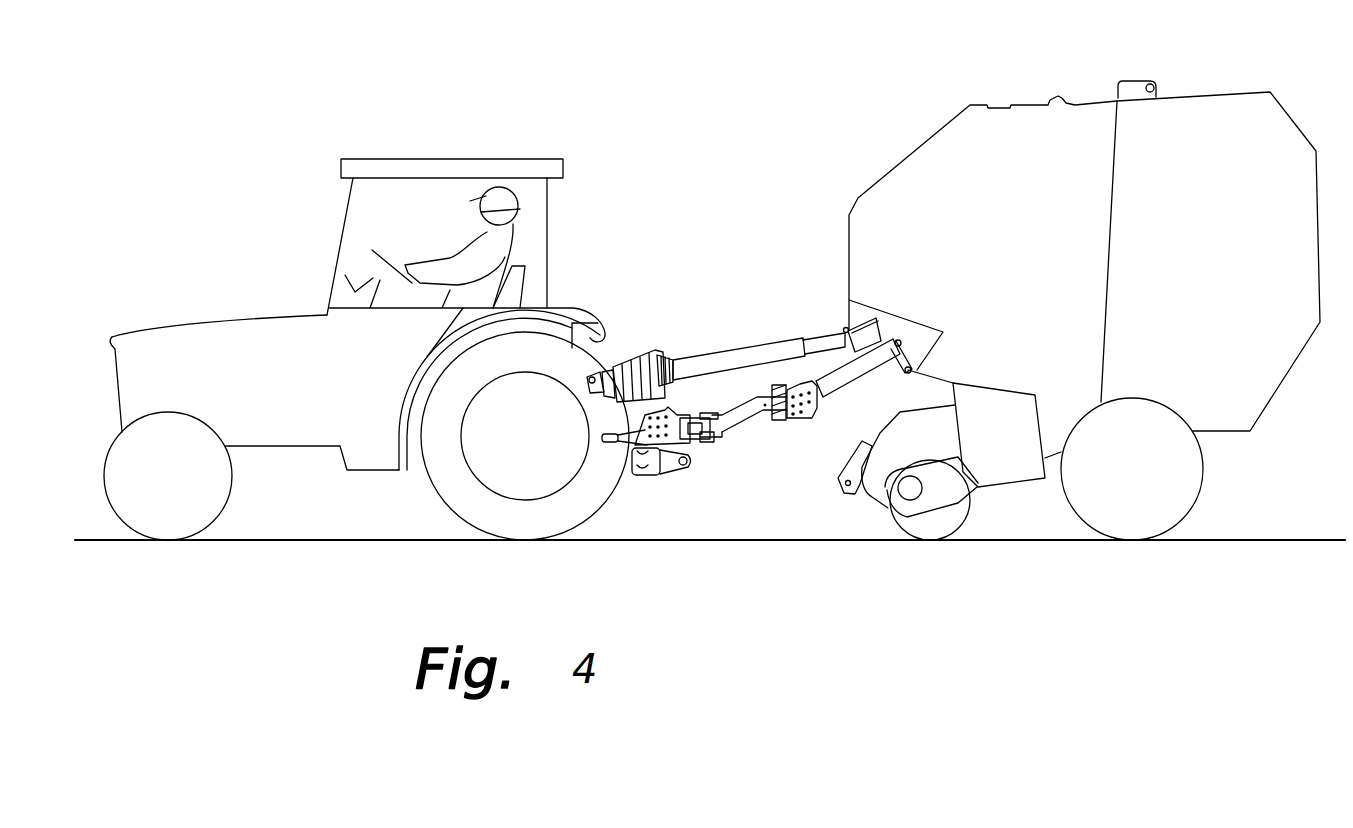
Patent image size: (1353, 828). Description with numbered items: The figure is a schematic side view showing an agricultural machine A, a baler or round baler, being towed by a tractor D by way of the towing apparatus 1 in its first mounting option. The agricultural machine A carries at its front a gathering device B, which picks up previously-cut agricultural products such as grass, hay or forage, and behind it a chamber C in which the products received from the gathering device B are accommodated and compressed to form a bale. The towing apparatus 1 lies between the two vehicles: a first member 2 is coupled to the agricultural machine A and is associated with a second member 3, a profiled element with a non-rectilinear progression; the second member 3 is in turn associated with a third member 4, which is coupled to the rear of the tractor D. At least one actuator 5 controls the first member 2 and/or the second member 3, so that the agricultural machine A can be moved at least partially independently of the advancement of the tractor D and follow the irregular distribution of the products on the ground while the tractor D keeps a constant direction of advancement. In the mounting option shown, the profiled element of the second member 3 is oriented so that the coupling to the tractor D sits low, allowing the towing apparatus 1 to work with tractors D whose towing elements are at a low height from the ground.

The towing apparatus 1 is at (732, 458).
The first member 2 is at (834, 352).
The second member 3 is at (738, 390).
The third member 4 is at (654, 400).
The actuator 5 is at (715, 400).
The agricultural machine A is at (923, 124).
The gathering device B is at (865, 505).
The chamber C is at (1183, 155).
The tractor D is at (429, 148).